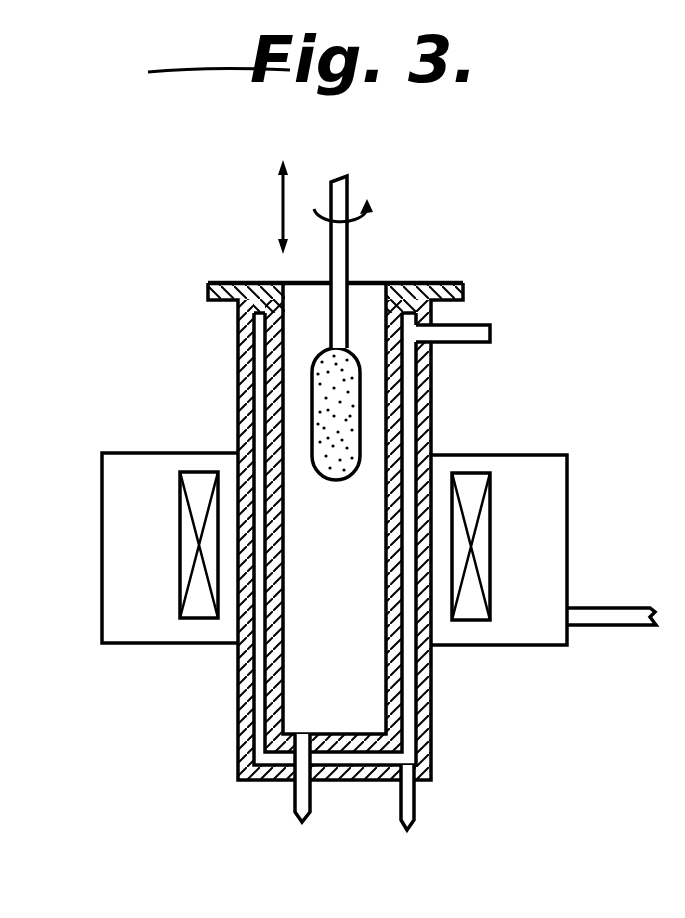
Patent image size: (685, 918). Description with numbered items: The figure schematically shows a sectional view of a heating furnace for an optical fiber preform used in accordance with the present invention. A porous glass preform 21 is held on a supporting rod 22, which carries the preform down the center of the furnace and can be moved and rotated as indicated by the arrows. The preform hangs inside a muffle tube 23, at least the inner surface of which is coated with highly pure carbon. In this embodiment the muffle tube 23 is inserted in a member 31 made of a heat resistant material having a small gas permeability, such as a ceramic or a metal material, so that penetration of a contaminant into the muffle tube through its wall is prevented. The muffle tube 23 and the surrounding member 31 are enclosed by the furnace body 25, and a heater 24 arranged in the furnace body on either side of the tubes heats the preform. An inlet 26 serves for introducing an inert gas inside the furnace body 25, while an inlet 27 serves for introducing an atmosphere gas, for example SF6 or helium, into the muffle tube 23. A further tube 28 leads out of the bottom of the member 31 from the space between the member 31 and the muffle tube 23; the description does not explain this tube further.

The porous glass preform 21 is at (355, 437).
The supporting rod 22 is at (342, 190).
The muffle tube 23 is at (399, 411).
The heater 24 is at (478, 622).
The furnace body 25 is at (567, 522).
The inlet for introducing an inert gas 26 is at (606, 617).
The inlet for introducing an atmosphere gas 27 is at (296, 800).
The outer vessel outlet tube 28 is at (415, 795).
The member made of a heat resistant material having a small gas permeability 31 is at (433, 757).